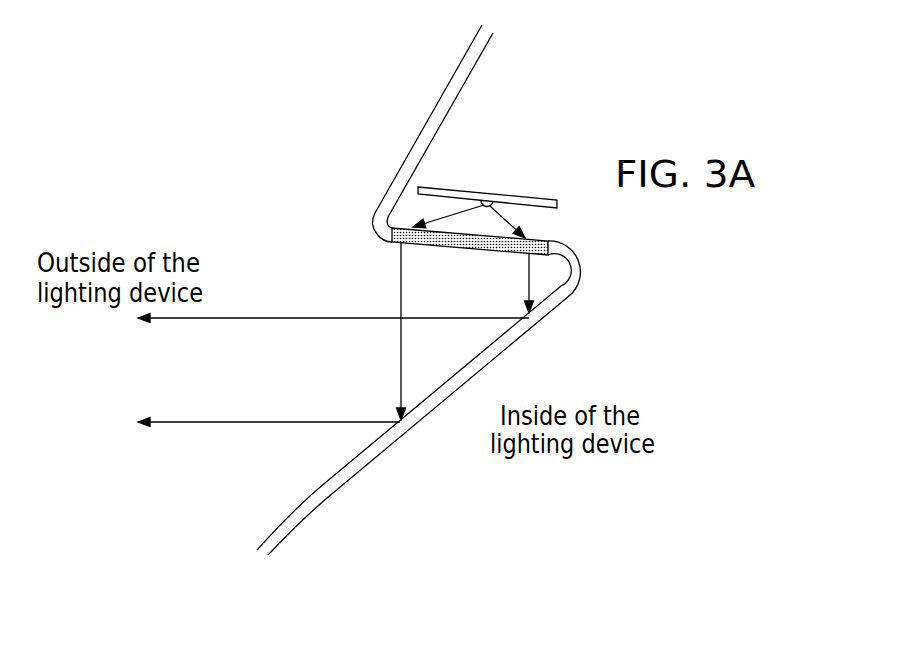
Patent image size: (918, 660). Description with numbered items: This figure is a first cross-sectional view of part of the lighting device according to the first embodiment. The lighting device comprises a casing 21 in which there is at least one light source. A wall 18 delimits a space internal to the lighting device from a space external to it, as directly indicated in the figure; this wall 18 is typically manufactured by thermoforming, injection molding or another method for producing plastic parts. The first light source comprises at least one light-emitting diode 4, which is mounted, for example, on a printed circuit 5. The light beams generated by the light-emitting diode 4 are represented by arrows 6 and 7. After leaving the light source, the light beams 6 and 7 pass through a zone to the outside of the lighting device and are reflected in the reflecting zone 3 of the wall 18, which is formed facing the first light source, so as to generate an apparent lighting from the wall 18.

The casing 21 is at (493, 123).
The printed circuit 5 is at (535, 198).
The light-emitting diode 4 is at (500, 205).
The light beam 6 is at (398, 288).
The light beam 7 is at (536, 285).
The reflecting zone 3 is at (401, 409).
The wall 18 is at (314, 497).